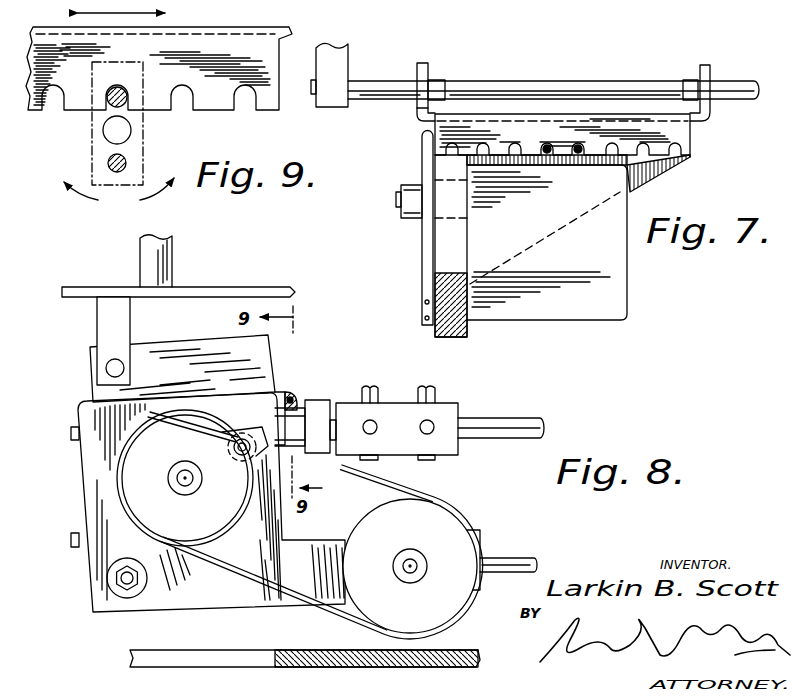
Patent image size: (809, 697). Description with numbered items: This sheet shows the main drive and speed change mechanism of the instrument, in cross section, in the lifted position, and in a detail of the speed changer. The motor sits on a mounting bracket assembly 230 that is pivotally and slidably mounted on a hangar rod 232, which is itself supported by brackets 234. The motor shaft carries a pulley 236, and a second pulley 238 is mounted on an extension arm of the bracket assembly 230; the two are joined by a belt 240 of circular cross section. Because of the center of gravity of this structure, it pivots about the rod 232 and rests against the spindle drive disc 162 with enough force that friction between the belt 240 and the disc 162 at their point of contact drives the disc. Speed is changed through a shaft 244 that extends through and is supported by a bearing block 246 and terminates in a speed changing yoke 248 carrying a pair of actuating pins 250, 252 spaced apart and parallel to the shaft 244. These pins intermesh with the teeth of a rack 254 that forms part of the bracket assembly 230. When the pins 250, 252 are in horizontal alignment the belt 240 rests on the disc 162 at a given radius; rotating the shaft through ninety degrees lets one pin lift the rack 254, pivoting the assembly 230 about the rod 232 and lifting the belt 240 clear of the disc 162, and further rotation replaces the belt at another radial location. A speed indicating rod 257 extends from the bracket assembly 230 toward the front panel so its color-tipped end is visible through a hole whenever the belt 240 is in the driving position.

In FIG. 8, the spindle drive disc 162 is at (462, 655).
In FIG. 8, the mounting bracket assembly 230 is at (82, 408).
In FIG. 7, the hangar rod 232 is at (596, 88).
In FIG. 8, the hangar rod 232 is at (106, 370).
In FIG. 7, the brackets 234 is at (345, 62).
In FIG. 8, the brackets 234 is at (115, 318).
In FIG. 7, the pulley 236 is at (420, 162).
In FIG. 8, the pulley 236 is at (136, 480).
In FIG. 8, the second pulley 238 is at (436, 520).
In FIG. 7, the belt 240 is at (430, 281).
In FIG. 8, the belt 240 is at (338, 611).
In FIG. 8, the shaft 244 is at (520, 425).
In FIG. 8, the bearing block 246 is at (446, 410).
In FIG. 9, the speed changing yoke 248 is at (147, 141).
In FIG. 8, the speed changing yoke 248 is at (334, 392).
In FIG. 9, the actuating pin 250 is at (126, 92).
In FIG. 7, the actuating pin 250 is at (551, 155).
In FIG. 8, the actuating pin 250 is at (280, 404).
In FIG. 9, the actuating pin 252 is at (108, 157).
In FIG. 7, the actuating pin 252 is at (580, 155).
In FIG. 8, the actuating pin 252 is at (290, 445).
In FIG. 9, the rack 254 is at (226, 107).
In FIG. 7, the rack 254 is at (693, 148).
In FIG. 8, the rack 254 is at (292, 392).
In FIG. 8, the speed indicating rod 257 is at (520, 552).